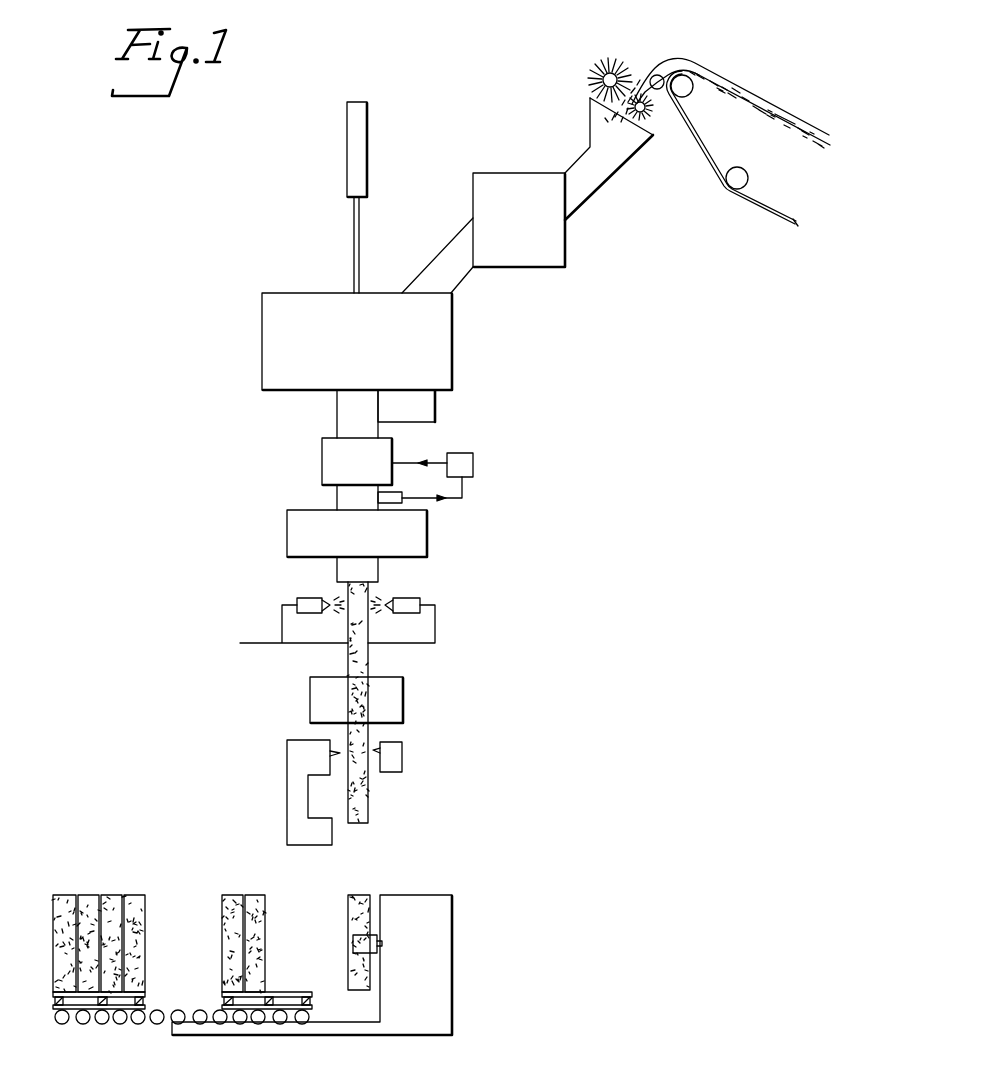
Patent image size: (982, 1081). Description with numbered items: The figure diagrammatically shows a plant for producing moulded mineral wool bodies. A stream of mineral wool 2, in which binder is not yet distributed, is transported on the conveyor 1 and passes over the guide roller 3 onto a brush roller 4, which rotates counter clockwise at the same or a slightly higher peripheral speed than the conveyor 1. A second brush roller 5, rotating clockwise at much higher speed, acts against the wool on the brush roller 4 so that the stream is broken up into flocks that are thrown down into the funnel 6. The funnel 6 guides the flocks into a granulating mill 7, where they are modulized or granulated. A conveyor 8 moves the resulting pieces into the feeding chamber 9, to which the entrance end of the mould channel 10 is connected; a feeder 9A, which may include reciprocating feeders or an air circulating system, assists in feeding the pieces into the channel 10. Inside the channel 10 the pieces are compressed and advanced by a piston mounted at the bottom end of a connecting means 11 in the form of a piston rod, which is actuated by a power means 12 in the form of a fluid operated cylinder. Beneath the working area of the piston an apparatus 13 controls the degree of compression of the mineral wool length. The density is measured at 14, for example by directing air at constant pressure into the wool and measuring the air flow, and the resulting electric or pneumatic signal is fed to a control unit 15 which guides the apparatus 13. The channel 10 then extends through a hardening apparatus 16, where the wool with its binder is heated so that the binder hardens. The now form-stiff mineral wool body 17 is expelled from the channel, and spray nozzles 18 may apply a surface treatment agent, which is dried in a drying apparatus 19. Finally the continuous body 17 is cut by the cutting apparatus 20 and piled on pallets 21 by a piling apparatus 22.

The conveyor 1 is at (697, 138).
The mineral wool web 2 is at (745, 92).
The guide roller 3 is at (655, 74).
The brush roller 4 is at (655, 115).
The brush roller 5 is at (603, 58).
The funnel 6 is at (593, 122).
The granulating mill 7 is at (522, 233).
The conveyor 8 is at (455, 273).
The feeding chamber 9 is at (361, 362).
The feeder 9A is at (428, 424).
The mould channel 10 is at (368, 424).
The connecting means 11 is at (355, 221).
The power means 12 is at (349, 143).
The apparatus for controlling the degree of compression 13 is at (368, 473).
The density measuring means 14 is at (402, 493).
The control unit 15 is at (475, 465).
The hardening apparatus 16 is at (368, 544).
The mineral wool body 17 is at (368, 657).
The spray nozzles 18 is at (310, 598).
The drying apparatus 19 is at (368, 711).
The cutting apparatus 20 is at (313, 771).
The pallets 21 is at (293, 992).
The piling apparatus 22 is at (427, 981).